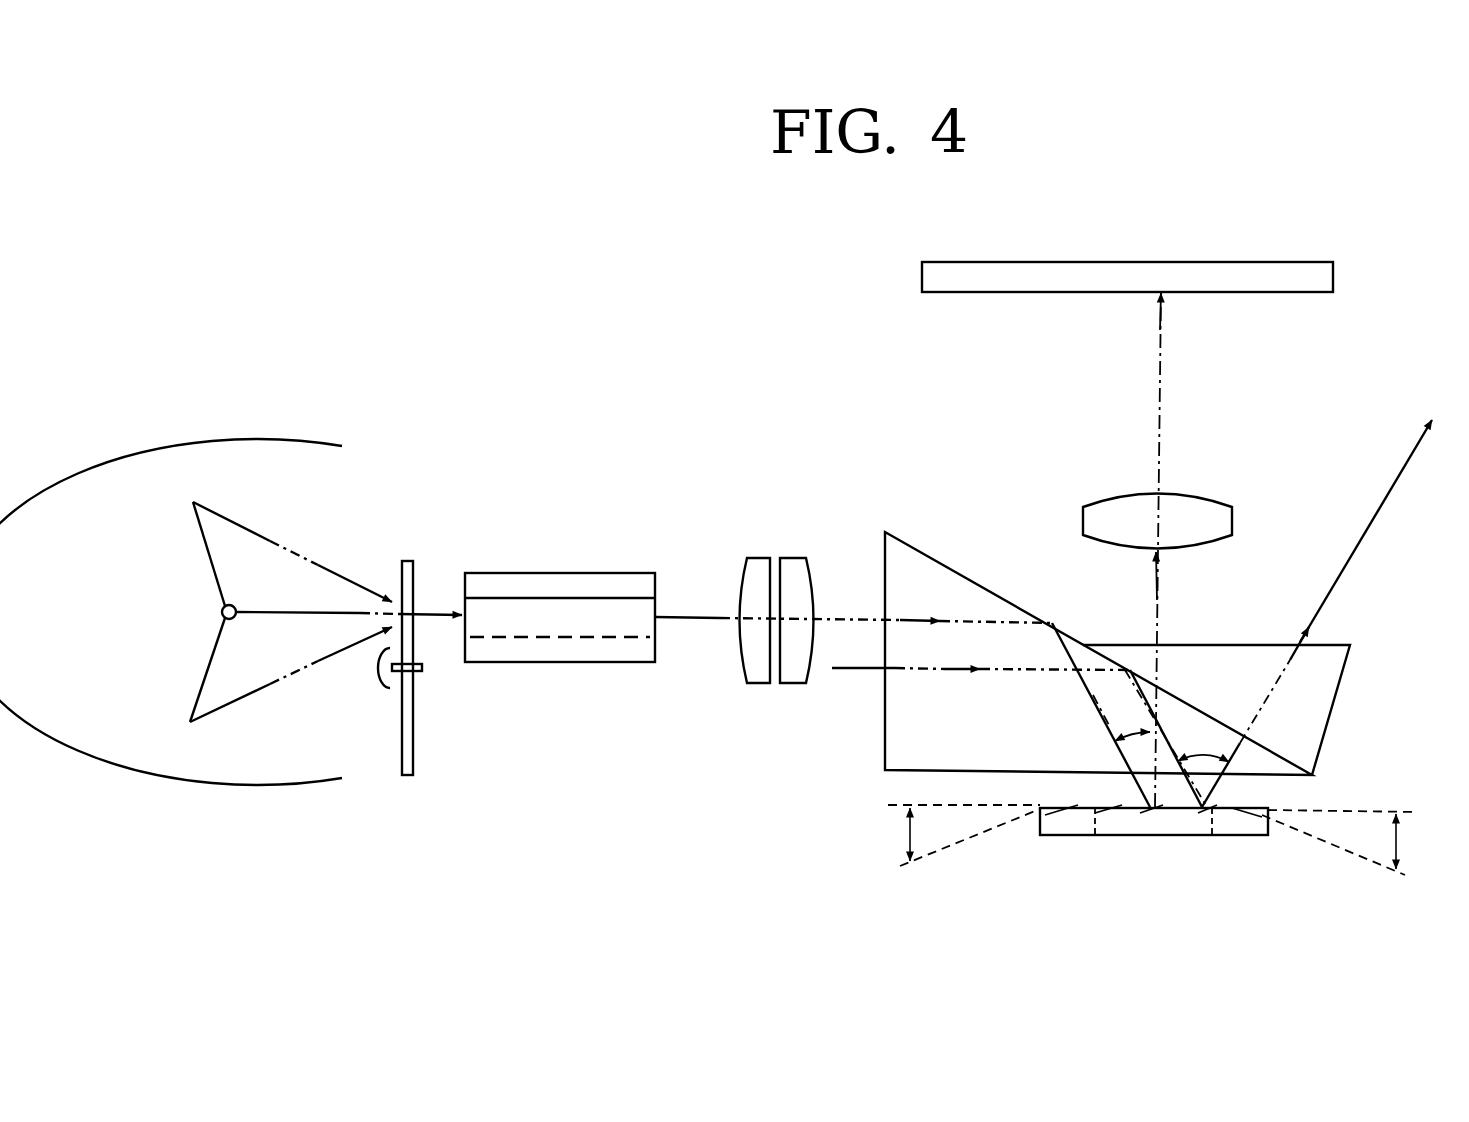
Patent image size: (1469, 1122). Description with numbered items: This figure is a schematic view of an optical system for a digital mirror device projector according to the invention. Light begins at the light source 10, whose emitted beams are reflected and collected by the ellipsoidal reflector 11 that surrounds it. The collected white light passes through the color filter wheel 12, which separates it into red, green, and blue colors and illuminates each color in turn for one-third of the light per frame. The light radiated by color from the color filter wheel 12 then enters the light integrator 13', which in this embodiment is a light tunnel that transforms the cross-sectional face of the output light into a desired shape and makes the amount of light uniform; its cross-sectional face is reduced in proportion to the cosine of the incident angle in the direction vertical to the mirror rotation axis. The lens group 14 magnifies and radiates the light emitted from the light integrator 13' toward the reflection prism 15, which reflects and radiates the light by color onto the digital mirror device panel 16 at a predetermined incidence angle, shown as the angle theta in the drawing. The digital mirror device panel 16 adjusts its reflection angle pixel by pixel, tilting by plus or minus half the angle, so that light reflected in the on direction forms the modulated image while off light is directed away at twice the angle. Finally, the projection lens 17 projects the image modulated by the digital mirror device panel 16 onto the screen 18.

The light source 10 is at (222, 612).
The ellipsoidal reflector 11 is at (284, 458).
The color filter wheel 12 is at (406, 559).
The light integrator 13' is at (682, 567).
The lens group 14 is at (795, 558).
The reflection prism 15 is at (913, 548).
The digital mirror device panel 16 is at (1150, 837).
The projection lens 17 is at (1188, 494).
The screen 18 is at (1335, 275).